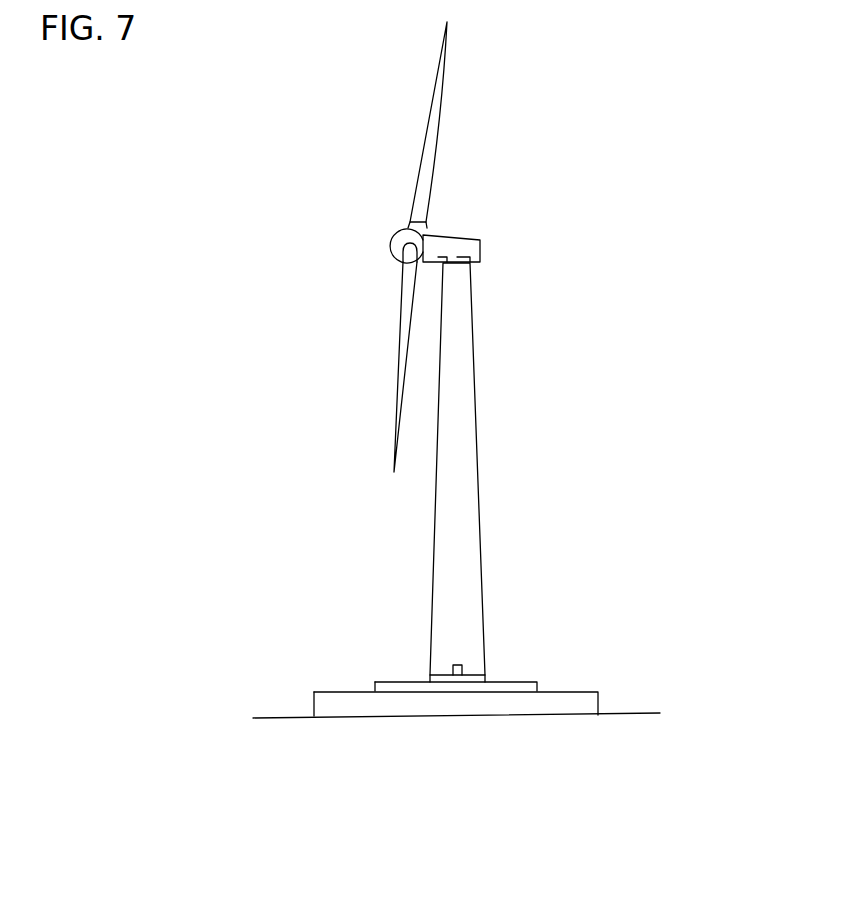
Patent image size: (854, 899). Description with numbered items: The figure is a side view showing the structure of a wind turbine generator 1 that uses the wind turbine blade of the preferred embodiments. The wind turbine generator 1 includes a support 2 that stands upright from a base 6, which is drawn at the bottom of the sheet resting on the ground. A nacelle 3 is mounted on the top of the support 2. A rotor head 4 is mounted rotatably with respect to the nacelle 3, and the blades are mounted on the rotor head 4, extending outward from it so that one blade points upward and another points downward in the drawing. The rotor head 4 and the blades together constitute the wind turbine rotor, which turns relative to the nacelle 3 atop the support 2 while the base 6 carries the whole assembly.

The wind turbine generator 1 is at (615, 183).
The support 2 is at (477, 417).
The nacelle 3 is at (463, 232).
The rotor head 4 is at (390, 240).
The base 6 is at (565, 693).